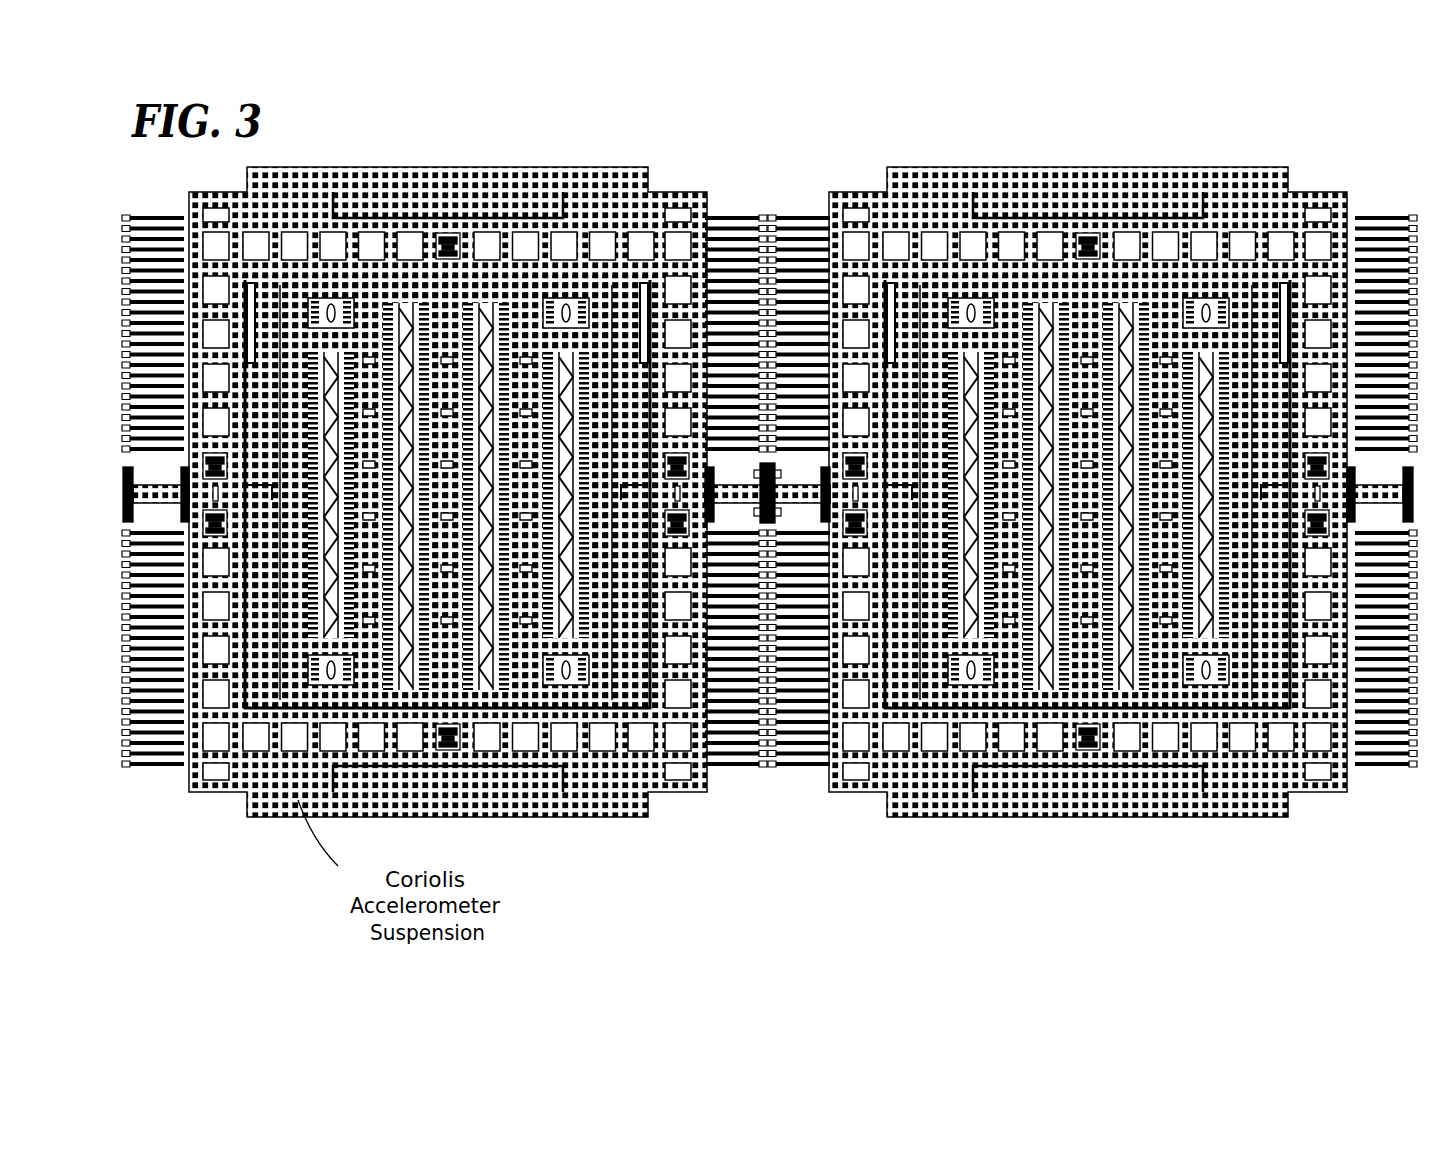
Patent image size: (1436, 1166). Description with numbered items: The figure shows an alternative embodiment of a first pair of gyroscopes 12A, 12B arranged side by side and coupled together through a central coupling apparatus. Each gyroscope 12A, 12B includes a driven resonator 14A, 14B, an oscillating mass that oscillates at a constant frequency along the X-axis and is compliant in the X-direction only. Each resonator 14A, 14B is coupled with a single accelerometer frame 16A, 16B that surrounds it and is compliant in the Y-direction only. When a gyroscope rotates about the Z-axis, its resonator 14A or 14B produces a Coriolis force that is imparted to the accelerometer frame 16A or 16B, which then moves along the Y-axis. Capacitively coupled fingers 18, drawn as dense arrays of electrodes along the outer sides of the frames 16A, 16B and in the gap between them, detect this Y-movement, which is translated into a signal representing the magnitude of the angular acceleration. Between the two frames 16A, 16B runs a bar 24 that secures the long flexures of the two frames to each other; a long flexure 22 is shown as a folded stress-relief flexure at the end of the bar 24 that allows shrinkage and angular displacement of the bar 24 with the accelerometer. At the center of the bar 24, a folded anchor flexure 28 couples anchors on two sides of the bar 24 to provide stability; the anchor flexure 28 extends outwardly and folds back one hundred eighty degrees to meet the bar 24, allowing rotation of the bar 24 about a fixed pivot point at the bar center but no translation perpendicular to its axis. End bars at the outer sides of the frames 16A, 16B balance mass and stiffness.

The gyroscope 12A is at (425, 519).
The gyroscope 12B is at (1088, 539).
The resonator 14A is at (367, 330).
The resonator 14B is at (1162, 690).
The frame 16A is at (212, 792).
The frame 16B is at (1322, 788).
The capacitively coupled fingers 18 is at (800, 790).
The long flexure 22 is at (712, 520).
The bar 24 is at (736, 483).
The anchor flexure 28 is at (778, 472).